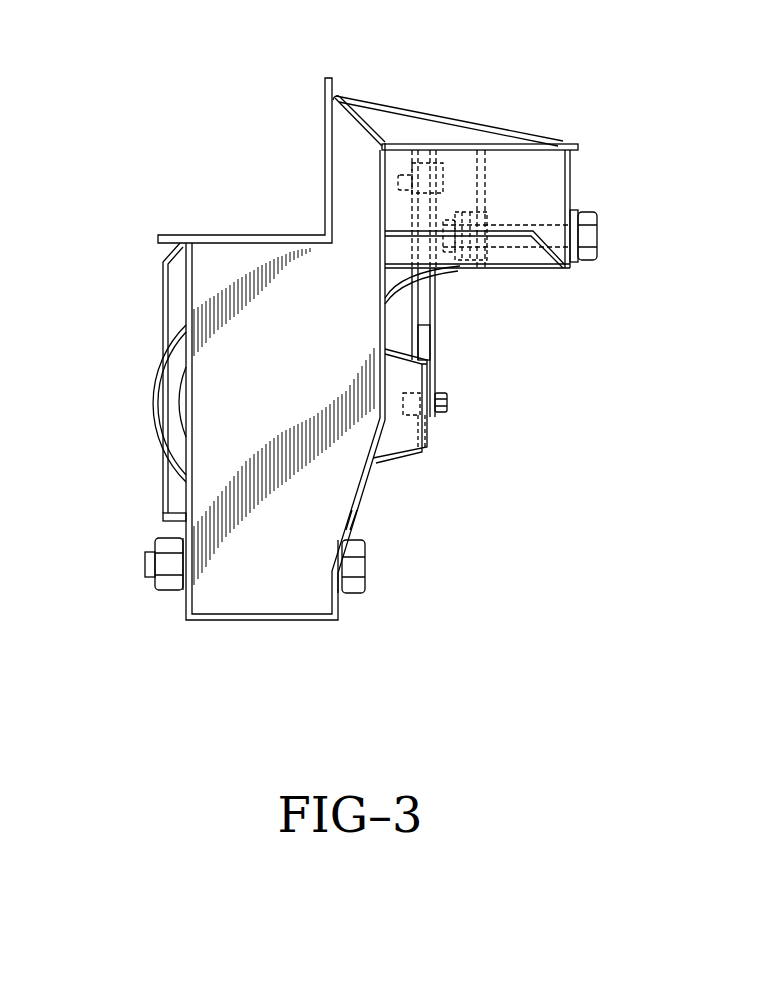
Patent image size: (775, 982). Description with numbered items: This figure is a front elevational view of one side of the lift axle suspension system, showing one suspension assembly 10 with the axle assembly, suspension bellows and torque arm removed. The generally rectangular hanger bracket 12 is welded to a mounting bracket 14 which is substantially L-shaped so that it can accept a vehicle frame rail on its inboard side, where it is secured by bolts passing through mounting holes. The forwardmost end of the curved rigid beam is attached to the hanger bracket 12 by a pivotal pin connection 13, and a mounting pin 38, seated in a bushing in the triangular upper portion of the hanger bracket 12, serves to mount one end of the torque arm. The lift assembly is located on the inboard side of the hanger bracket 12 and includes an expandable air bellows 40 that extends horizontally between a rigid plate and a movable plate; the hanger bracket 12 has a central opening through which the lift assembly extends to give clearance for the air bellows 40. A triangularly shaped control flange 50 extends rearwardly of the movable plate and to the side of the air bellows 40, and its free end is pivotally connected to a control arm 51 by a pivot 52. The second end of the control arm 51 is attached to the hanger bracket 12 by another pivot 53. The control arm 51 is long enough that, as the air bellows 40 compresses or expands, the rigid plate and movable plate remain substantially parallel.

The suspension assembly 10 is at (541, 317).
The hanger bracket 12 is at (248, 596).
The pivotal pin connection 13 is at (364, 563).
The mounting bracket 14 is at (325, 148).
The mounting pin 38 is at (590, 236).
The air bellows 40 is at (157, 403).
The control flange 50 is at (396, 443).
The control arm 51 is at (436, 311).
The pivot 52 is at (449, 403).
The pivot 53 is at (445, 178).